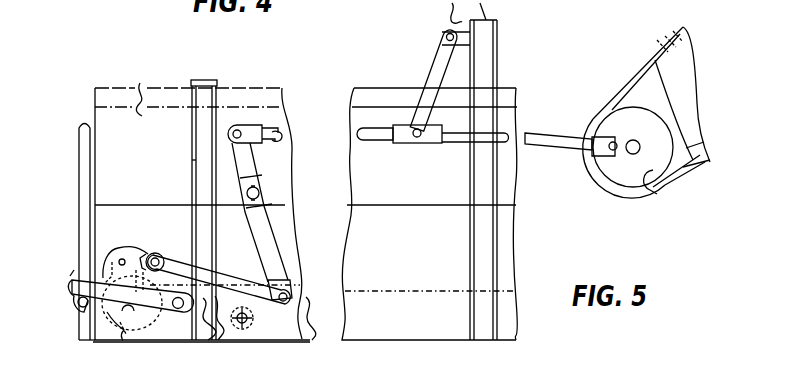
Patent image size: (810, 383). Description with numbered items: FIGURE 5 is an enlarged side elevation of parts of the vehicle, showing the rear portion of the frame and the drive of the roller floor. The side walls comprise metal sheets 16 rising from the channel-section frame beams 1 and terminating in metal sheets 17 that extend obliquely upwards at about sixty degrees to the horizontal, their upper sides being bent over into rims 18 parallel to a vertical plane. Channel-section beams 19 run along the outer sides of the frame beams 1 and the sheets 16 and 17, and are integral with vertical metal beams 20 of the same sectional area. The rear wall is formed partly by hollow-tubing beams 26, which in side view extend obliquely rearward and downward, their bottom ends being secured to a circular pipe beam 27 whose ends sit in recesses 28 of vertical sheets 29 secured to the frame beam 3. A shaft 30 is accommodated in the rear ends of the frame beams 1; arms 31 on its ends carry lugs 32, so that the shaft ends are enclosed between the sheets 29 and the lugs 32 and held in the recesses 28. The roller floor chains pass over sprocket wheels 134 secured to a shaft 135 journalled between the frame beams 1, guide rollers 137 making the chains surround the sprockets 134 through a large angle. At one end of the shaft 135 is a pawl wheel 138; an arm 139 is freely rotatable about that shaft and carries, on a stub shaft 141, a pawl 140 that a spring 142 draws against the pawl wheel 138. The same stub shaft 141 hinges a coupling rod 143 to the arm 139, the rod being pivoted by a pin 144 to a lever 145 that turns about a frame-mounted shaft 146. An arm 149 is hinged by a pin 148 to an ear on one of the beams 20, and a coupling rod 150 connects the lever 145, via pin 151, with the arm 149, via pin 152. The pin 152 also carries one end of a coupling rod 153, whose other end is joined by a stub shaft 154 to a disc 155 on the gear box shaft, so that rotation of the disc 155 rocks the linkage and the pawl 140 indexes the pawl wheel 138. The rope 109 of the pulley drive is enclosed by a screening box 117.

The frame beams 1 is at (425, 342).
The frame beam 3 is at (92, 342).
The metal sheets 16 is at (352, 268).
The metal sheets 17 is at (144, 94).
The bent-over rims 18 is at (279, 72).
The beams 19 is at (194, 168).
The vertical metal beams 20 is at (216, 60).
The beams 26 is at (80, 152).
The beam 27 is at (70, 296).
The recesses 28 is at (71, 282).
The vertical sheets 29 is at (84, 318).
The shaft 30 is at (223, 342).
The arms 31 is at (72, 280).
The lugs 32 is at (76, 310).
The rope 109 is at (719, 140).
The screening boxes 117 is at (630, 80).
The sprocket wheels 134 is at (140, 343).
The shaft 135 is at (178, 343).
The guide rollers 137 is at (261, 340).
The pawl wheel 138 is at (122, 340).
The arm 139 is at (160, 253).
The pawl 140 is at (112, 262).
The stub shaft 141 is at (190, 253).
The spring 142 is at (147, 254).
The coupling rod 143 is at (270, 264).
The pin 144 is at (303, 336).
The lever 145 is at (278, 268).
The shaft 146 is at (262, 183).
The pin 148 is at (446, 33).
The arm 149 is at (435, 57).
The coupling rod 150 is at (284, 143).
The pin 151 is at (230, 133).
The pin 152 is at (415, 143).
The coupling rod 153 is at (434, 145).
The stub shaft 154 is at (615, 160).
The disc 155 is at (657, 192).